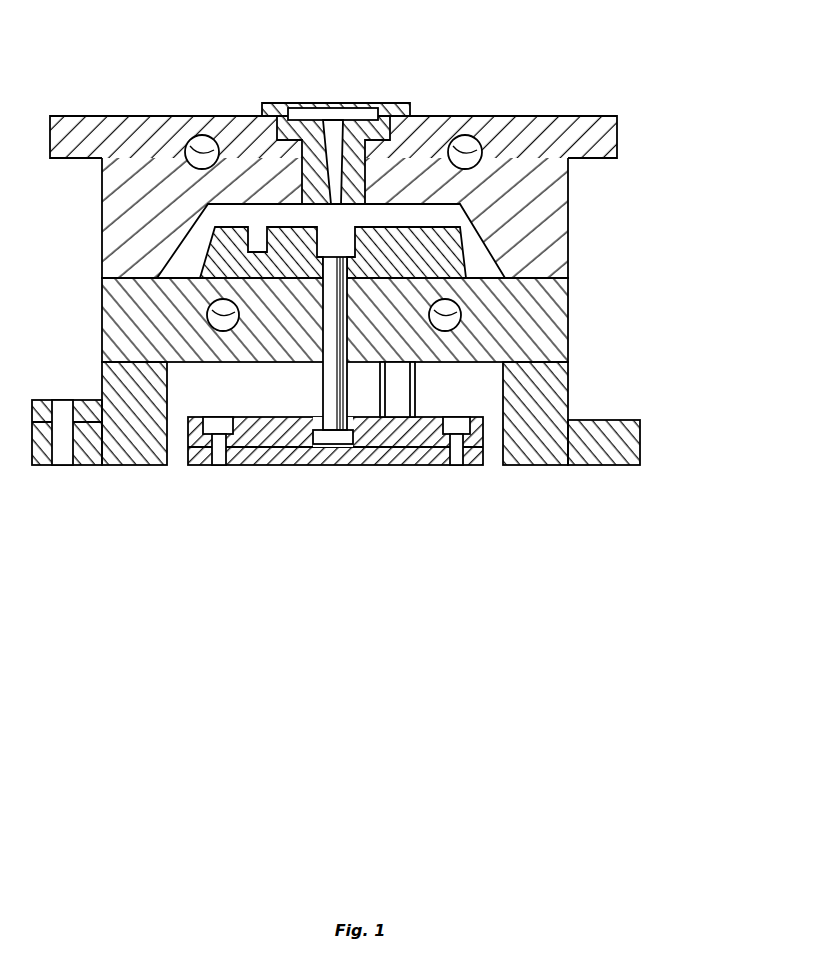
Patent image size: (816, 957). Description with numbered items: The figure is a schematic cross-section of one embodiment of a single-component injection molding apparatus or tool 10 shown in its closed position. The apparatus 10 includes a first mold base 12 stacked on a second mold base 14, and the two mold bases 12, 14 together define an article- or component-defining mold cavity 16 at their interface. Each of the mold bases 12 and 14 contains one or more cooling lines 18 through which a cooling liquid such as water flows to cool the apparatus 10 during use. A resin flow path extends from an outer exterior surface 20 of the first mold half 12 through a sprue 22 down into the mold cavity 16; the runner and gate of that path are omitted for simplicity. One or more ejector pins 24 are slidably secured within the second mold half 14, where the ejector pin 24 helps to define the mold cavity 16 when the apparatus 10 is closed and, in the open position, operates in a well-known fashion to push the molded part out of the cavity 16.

The injection molding apparatus 10 is at (612, 105).
The first mold base 12 is at (573, 249).
The second mold base 14 is at (573, 322).
The mold cavity 16 is at (432, 210).
The cooling lines 18 is at (212, 137).
The outer exterior surface 20 is at (139, 116).
The sprue 22 is at (357, 103).
The ejector pin 24 is at (318, 390).